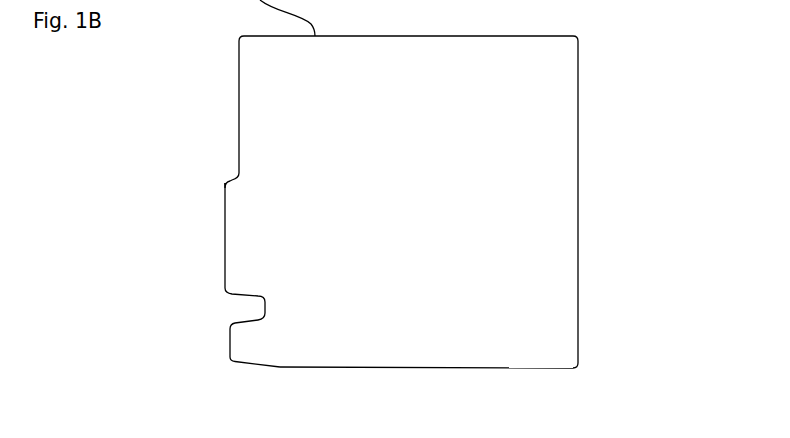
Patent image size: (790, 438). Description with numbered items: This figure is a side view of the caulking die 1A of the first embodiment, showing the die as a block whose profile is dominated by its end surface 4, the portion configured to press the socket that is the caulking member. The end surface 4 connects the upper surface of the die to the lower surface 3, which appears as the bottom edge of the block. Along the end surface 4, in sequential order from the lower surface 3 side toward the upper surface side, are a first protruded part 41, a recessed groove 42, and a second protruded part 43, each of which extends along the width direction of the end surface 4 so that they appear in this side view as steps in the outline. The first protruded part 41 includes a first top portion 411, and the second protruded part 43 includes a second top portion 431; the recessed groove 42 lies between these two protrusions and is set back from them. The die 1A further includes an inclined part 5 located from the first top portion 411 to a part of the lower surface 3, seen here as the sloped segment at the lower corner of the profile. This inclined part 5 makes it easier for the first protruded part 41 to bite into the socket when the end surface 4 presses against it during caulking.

The die 1A is at (660, 25).
The end surface 4 is at (235, 107).
The second top portion 431 is at (157, 235).
The second protruded part 43 is at (225, 233).
The recessed groove 42 is at (262, 308).
The first top portion 411 is at (166, 345).
The first protruded part 41 is at (230, 345).
The inclined part 5 is at (253, 365).
The lower surface 3 is at (314, 368).